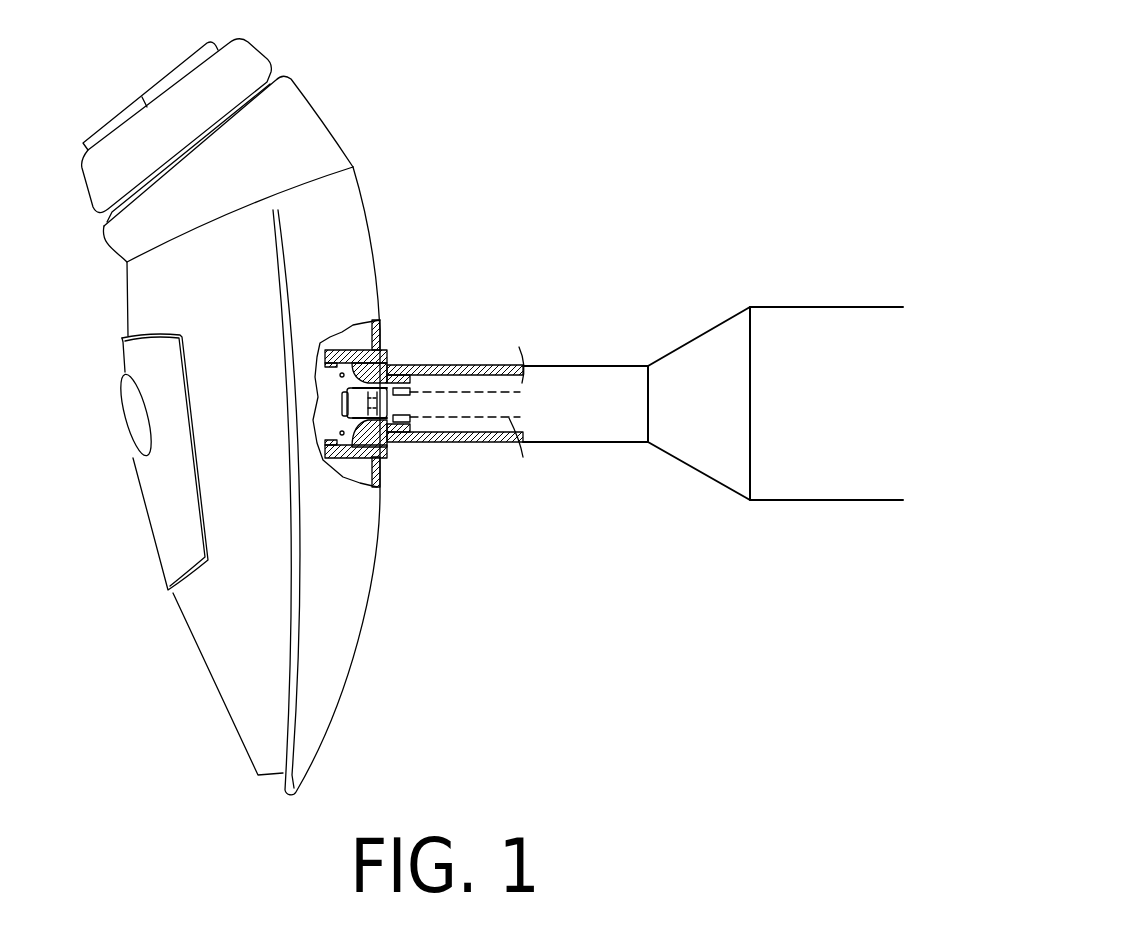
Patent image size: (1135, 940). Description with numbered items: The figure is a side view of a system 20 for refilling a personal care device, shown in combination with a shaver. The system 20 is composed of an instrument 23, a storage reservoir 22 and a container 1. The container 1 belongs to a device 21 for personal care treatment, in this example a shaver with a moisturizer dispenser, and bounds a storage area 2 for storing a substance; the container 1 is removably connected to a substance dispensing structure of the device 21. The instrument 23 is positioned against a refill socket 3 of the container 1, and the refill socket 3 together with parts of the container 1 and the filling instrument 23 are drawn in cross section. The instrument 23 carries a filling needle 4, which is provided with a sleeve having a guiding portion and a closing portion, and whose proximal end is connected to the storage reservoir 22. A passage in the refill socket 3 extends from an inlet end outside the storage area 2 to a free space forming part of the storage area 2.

The container 1 is at (386, 273).
The storage area 2 is at (330, 397).
The refill socket 3 is at (399, 341).
The filling needle 4 is at (472, 408).
The system 20 is at (599, 103).
The device for personal care treatment 21 is at (354, 105).
The storage reservoir 22 is at (853, 500).
The instrument 23 is at (610, 443).